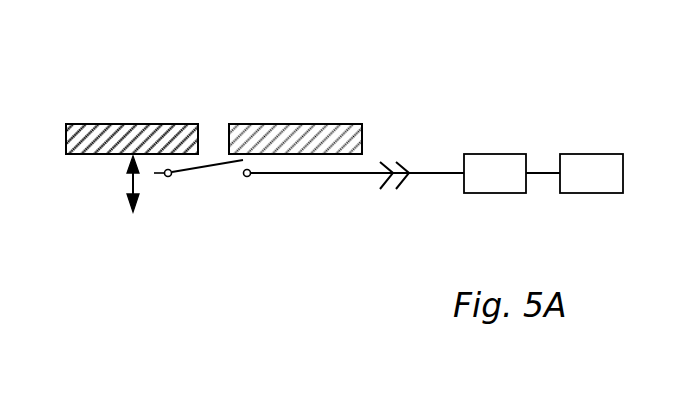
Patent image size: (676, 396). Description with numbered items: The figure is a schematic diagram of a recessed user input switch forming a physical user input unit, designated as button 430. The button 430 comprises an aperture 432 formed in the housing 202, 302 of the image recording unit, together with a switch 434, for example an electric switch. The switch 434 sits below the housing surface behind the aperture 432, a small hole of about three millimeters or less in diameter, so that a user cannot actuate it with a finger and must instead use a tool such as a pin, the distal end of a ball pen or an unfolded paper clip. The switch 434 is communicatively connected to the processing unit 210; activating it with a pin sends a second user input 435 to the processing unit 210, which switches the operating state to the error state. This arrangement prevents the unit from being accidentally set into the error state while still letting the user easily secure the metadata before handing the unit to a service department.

The housing 202 is at (123, 125).
The housing 302 is at (132, 139).
The button 430 is at (258, 113).
The aperture 432 is at (213, 137).
The switch 434 is at (213, 180).
The second user input 435 is at (495, 173).
The processing unit 210 is at (591, 173).